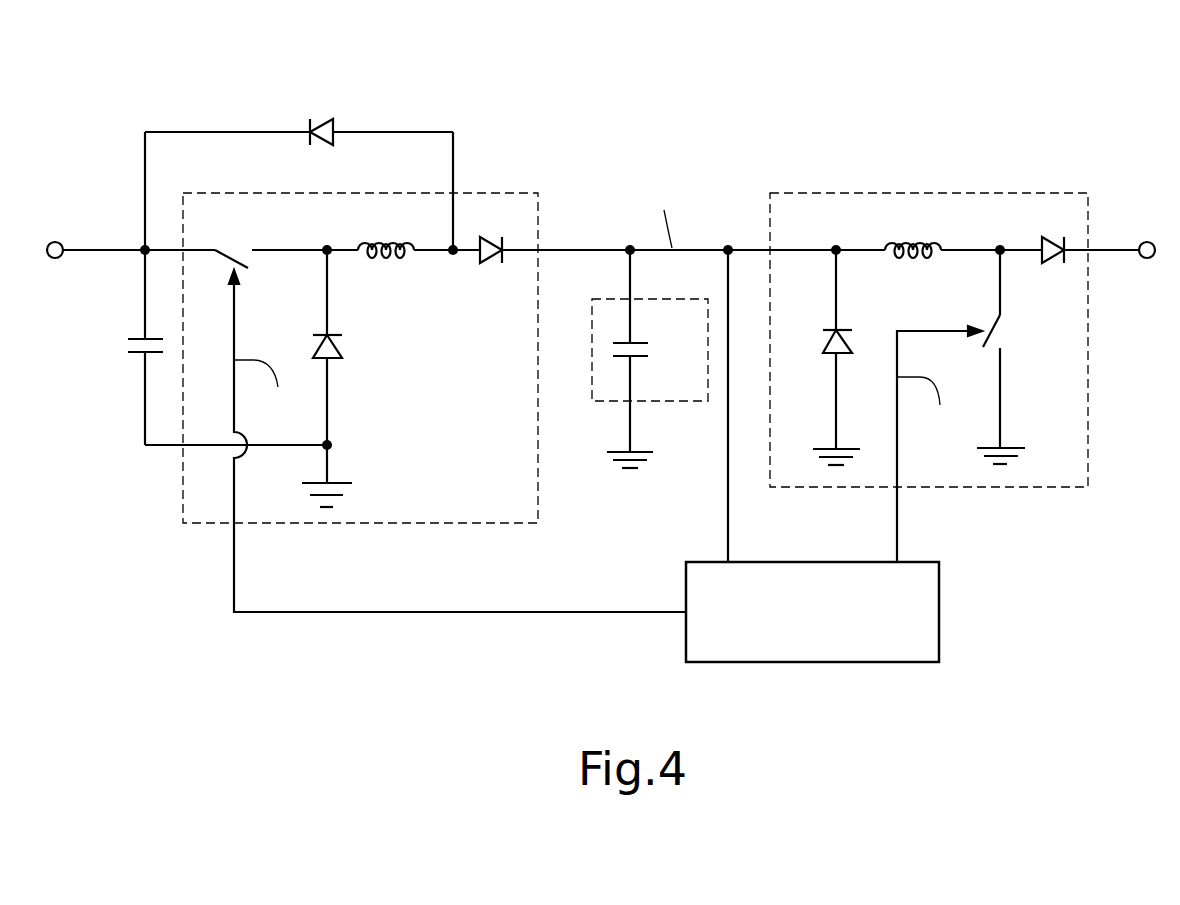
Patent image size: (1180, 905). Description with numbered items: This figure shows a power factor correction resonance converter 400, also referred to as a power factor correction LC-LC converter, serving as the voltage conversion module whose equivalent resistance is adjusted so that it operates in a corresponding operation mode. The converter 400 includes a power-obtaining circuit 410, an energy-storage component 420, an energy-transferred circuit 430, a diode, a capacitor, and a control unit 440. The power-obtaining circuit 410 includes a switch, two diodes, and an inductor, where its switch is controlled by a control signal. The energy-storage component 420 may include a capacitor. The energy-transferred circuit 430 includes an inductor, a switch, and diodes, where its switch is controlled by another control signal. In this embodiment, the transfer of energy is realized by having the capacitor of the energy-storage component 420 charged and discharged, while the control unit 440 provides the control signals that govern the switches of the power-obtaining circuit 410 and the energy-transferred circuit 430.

The power converter circuit 400 is at (598, 384).
The power-obtaining circuit 410 is at (490, 193).
The energy-storage component 420 is at (683, 402).
The energy-transferred circuit 430 is at (1009, 192).
The control unit 440 is at (835, 642).